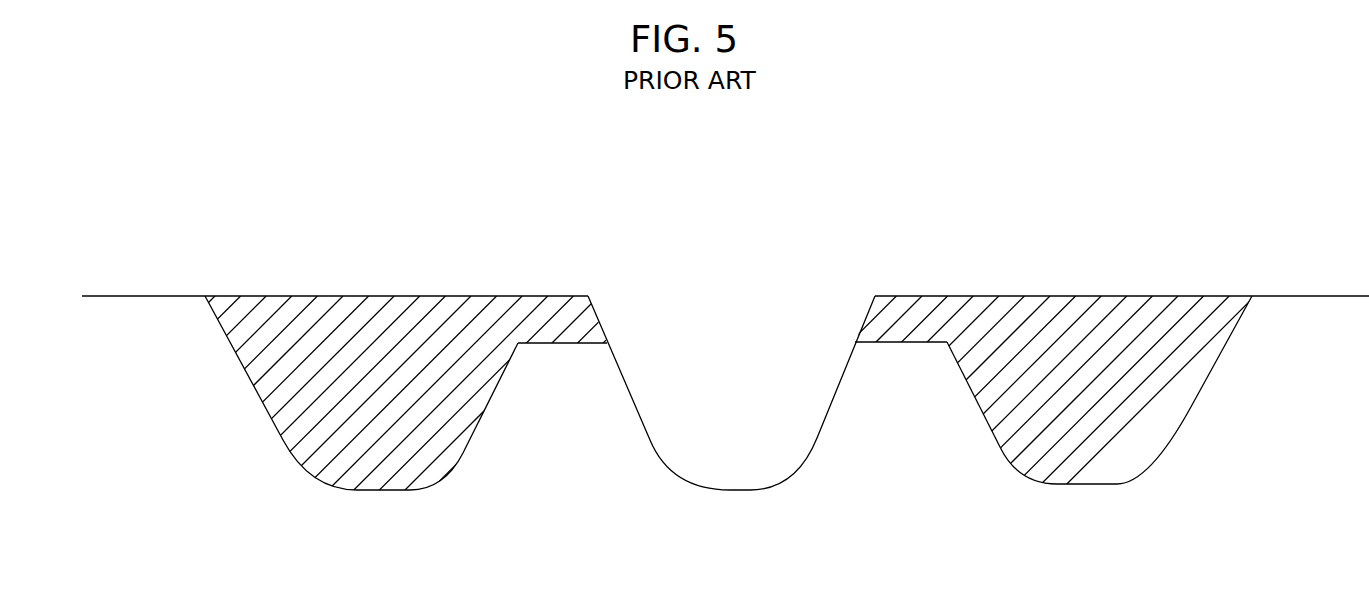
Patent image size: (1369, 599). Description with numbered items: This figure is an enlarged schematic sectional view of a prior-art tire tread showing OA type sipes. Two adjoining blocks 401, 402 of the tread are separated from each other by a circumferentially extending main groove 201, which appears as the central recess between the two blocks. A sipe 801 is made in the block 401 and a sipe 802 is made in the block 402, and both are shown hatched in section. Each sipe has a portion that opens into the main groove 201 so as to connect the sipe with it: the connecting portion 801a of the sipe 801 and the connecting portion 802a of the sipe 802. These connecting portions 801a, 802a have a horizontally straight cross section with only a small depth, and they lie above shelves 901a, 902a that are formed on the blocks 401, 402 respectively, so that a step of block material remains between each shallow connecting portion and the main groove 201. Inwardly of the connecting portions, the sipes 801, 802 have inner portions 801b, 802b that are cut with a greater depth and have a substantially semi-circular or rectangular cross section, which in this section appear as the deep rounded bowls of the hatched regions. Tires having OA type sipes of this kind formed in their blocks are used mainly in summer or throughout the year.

The block 401 is at (110, 296).
The block 402 is at (1316, 296).
The main groove 201 is at (723, 370).
The sipe 801 is at (372, 330).
The connecting portion 801a is at (540, 322).
The inner portion 801b is at (267, 335).
The sipe 802 is at (1070, 348).
The connecting portion 802a is at (916, 313).
The inner portion 802b is at (1130, 398).
The shelf 901a is at (563, 382).
The shelf 902a is at (925, 395).